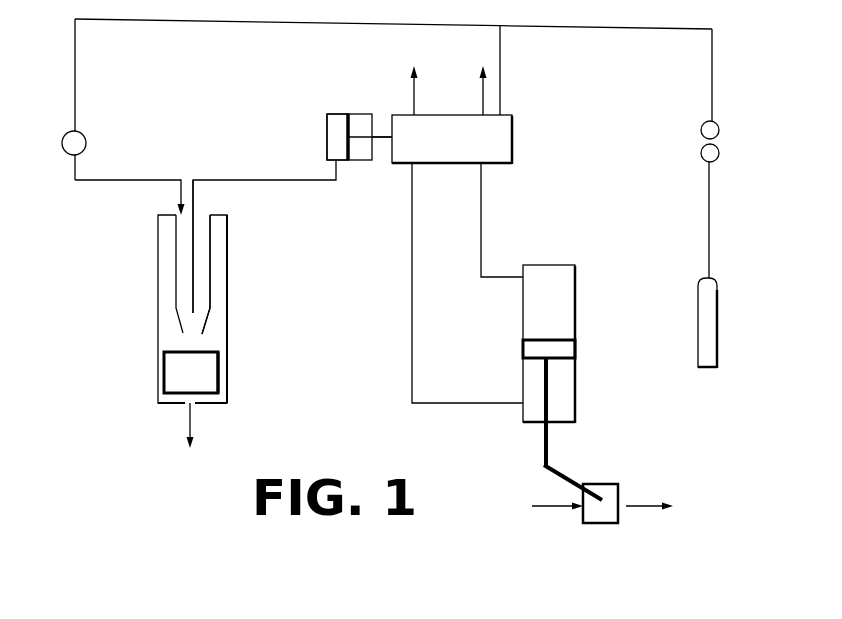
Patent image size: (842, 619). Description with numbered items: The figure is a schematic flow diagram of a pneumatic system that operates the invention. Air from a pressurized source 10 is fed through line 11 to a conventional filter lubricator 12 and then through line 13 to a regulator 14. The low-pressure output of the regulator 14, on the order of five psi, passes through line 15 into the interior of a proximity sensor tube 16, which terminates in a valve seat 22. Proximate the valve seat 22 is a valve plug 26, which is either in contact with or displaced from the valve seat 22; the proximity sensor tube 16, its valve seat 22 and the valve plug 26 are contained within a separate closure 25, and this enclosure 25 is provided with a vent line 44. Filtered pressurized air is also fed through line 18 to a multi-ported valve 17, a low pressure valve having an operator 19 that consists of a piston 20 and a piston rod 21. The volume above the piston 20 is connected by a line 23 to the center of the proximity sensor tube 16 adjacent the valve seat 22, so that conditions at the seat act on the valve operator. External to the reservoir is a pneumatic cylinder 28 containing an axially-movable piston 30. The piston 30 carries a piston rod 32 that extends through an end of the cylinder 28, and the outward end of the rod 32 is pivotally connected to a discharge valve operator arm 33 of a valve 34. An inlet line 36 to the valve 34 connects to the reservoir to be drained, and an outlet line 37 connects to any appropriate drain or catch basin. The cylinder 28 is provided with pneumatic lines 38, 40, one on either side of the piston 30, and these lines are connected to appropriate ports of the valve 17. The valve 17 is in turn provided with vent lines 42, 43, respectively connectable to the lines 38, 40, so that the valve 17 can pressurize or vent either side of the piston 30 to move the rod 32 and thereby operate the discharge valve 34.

The pressurized source 10 is at (697, 309).
The line 11 is at (708, 238).
The filter lubricator 12 is at (700, 125).
The line 13 is at (590, 29).
The regulator 14 is at (86, 140).
The line 15 is at (97, 182).
The proximity sensor tube 16 is at (175, 258).
The multi-ported valve 17 is at (514, 140).
The line 18 is at (503, 79).
The operator 19 is at (324, 90).
The piston 20 is at (345, 125).
The piston rod 21 is at (382, 135).
The valve seat 22 is at (205, 333).
The line 23 is at (200, 205).
The closure 25 is at (160, 358).
The valve plug 26 is at (218, 375).
The pneumatic cylinder 28 is at (522, 306).
The piston 30 is at (565, 339).
The piston rod 32 is at (545, 445).
The discharge valve operator arm 33 is at (570, 476).
The valve 34 is at (600, 524).
The inlet line 36 is at (549, 499).
The outlet line 37 is at (638, 504).
The pneumatic line 38 is at (482, 210).
The pneumatic line 40 is at (411, 205).
The vent line 42 is at (473, 87).
The vent line 43 is at (429, 87).
The vent line 44 is at (187, 418).